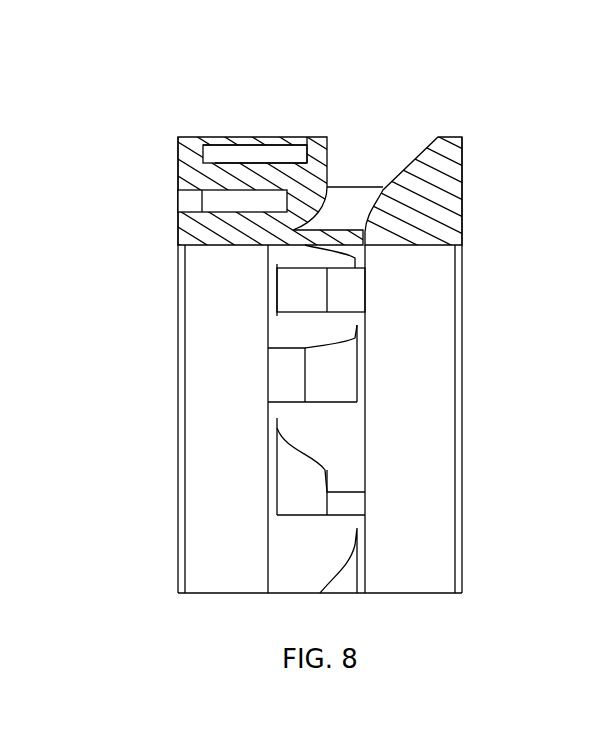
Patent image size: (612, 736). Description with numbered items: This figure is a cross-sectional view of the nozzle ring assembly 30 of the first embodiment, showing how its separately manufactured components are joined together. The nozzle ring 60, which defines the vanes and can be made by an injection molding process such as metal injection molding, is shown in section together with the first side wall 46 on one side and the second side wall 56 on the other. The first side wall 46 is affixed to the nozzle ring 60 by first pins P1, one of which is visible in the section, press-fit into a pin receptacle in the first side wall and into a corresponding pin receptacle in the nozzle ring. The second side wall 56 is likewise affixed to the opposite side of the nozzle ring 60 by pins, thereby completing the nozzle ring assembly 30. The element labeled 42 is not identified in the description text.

The nozzle ring assembly 30 is at (400, 92).
The seal carrier 42 is at (260, 172).
The first side wall 46 is at (193, 170).
The second side wall 56 is at (445, 203).
The nozzle ring 60 is at (300, 128).
The first pins P1 is at (238, 200).